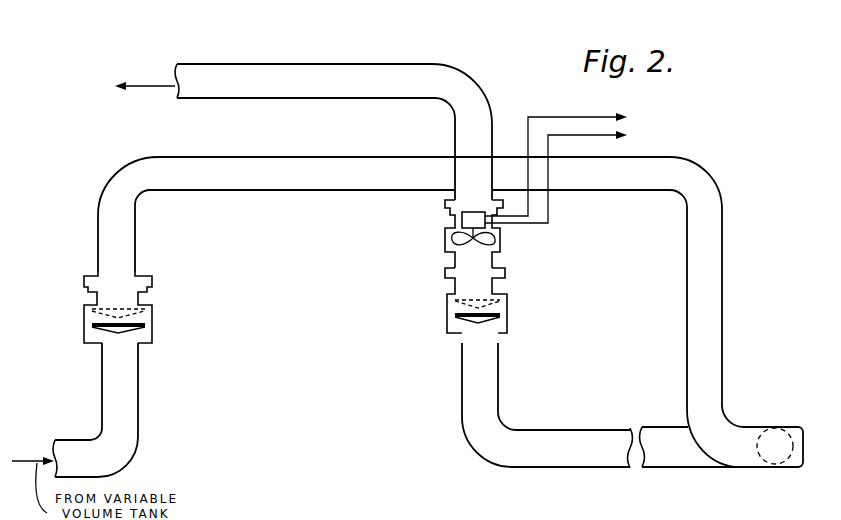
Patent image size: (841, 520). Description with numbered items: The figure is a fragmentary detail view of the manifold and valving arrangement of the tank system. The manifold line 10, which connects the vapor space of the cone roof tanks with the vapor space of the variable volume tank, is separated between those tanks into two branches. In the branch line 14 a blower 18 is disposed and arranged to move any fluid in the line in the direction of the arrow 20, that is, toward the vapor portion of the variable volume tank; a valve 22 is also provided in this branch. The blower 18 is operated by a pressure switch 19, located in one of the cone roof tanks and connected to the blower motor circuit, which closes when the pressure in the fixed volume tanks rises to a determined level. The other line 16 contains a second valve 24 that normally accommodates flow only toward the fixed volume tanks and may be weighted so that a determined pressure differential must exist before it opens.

The manifold line 10 is at (795, 462).
The branch line 14 is at (553, 466).
The line 16 is at (262, 192).
The blower 18 is at (442, 248).
The pressure switch 19 is at (610, 168).
The arrow 20 is at (147, 83).
The valve 22 is at (507, 325).
The second valve 24 is at (152, 325).